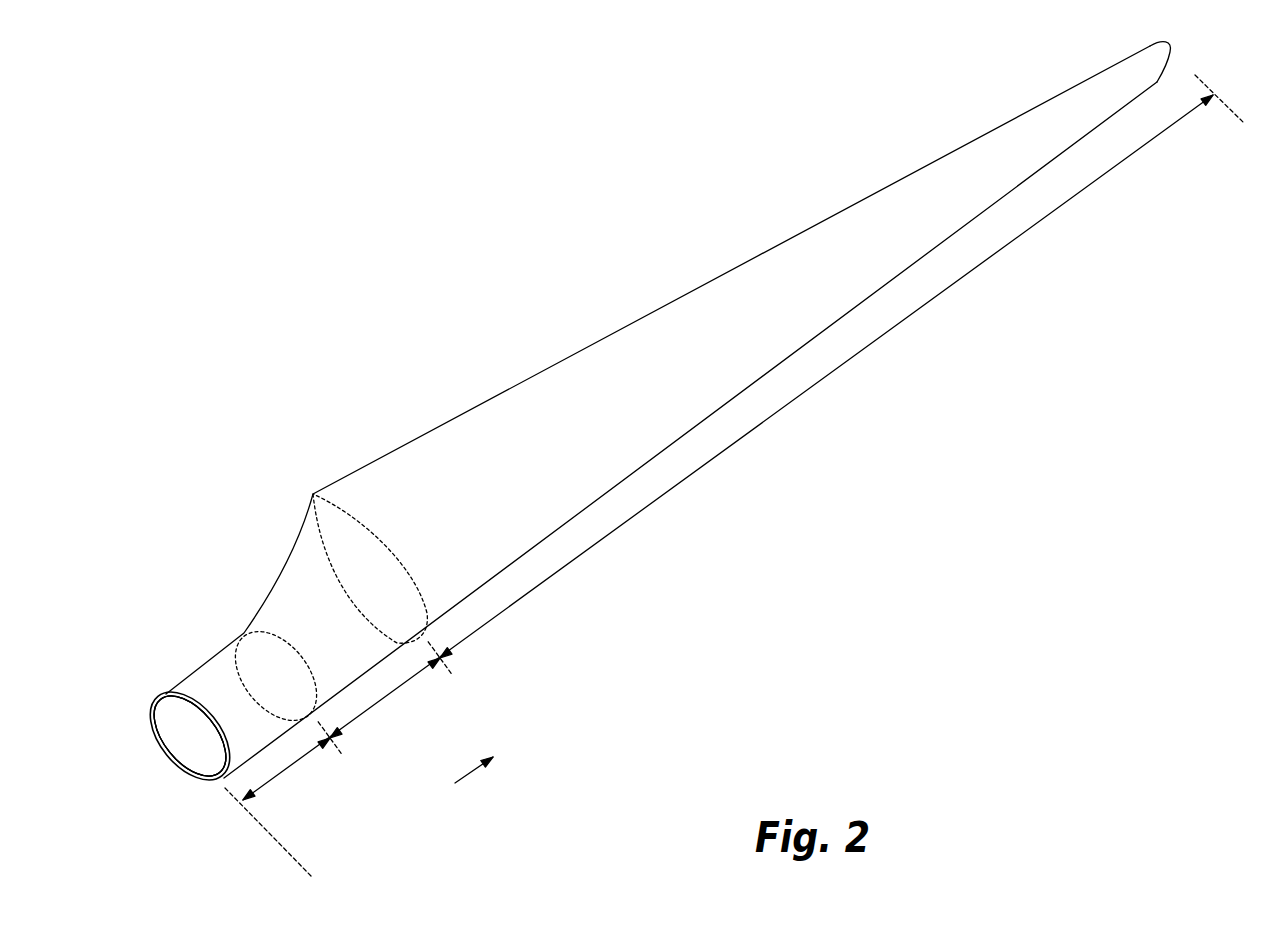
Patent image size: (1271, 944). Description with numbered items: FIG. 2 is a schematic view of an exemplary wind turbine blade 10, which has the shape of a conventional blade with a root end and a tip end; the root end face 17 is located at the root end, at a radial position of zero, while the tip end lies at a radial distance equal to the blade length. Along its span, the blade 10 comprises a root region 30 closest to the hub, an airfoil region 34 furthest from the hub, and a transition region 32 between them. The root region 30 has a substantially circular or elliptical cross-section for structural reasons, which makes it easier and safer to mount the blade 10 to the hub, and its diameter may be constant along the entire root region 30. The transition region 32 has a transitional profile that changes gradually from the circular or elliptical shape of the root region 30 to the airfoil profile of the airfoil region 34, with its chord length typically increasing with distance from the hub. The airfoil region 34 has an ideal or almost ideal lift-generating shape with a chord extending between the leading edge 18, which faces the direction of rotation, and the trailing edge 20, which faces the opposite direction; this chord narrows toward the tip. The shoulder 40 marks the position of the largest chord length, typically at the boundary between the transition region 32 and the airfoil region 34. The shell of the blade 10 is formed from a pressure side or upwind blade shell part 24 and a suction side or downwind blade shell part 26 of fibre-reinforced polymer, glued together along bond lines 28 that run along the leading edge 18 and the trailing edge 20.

The wind turbine blade 10 is at (642, 449).
The root end face 17 is at (177, 722).
The leading edge 18 is at (863, 302).
The trailing edge 20 is at (730, 268).
The pressure side blade shell part 24 is at (182, 689).
The suction side blade shell part 26 is at (192, 781).
The bond lines 28 is at (173, 693).
The root region 30 is at (290, 772).
The transition region 32 is at (390, 698).
The airfoil region 34 is at (752, 433).
The shoulder 40 is at (305, 510).